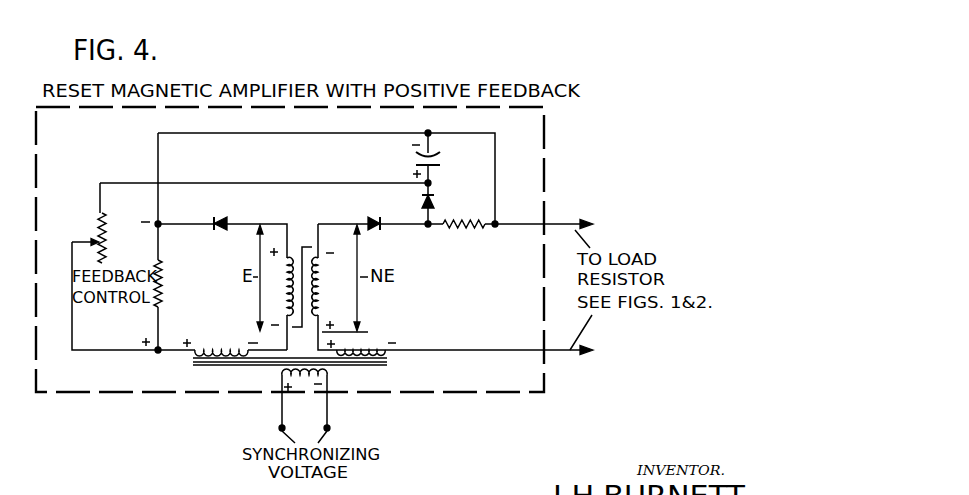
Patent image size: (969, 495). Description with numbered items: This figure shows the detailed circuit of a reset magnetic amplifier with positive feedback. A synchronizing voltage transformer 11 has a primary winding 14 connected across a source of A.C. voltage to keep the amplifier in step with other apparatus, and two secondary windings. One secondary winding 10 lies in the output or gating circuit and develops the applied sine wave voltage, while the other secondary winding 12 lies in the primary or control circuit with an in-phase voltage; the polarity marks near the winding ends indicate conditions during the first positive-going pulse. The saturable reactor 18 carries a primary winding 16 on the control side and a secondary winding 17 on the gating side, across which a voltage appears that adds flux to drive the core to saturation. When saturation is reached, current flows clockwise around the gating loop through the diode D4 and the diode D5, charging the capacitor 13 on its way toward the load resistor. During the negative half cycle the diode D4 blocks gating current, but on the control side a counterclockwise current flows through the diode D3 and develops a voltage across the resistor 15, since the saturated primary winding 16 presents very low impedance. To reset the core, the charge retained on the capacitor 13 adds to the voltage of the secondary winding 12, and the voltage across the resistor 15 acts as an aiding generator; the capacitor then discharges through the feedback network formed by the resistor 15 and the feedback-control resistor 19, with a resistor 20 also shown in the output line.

The secondary winding 10 is at (361, 350).
The synchronizing voltage transformer 11 is at (365, 367).
The secondary winding 12 is at (287, 332).
The capacitor 13 is at (441, 160).
The primary winding 14 is at (282, 374).
The resistor 15 is at (169, 283).
The primary winding 16 is at (279, 286).
The secondary winding 17 is at (321, 277).
The saturable reactor 18 is at (305, 247).
The resistor 19 is at (111, 238).
The resistor 20 is at (464, 235).
The diode D3 is at (226, 217).
The diode D4 is at (375, 217).
The diode D5 is at (436, 199).